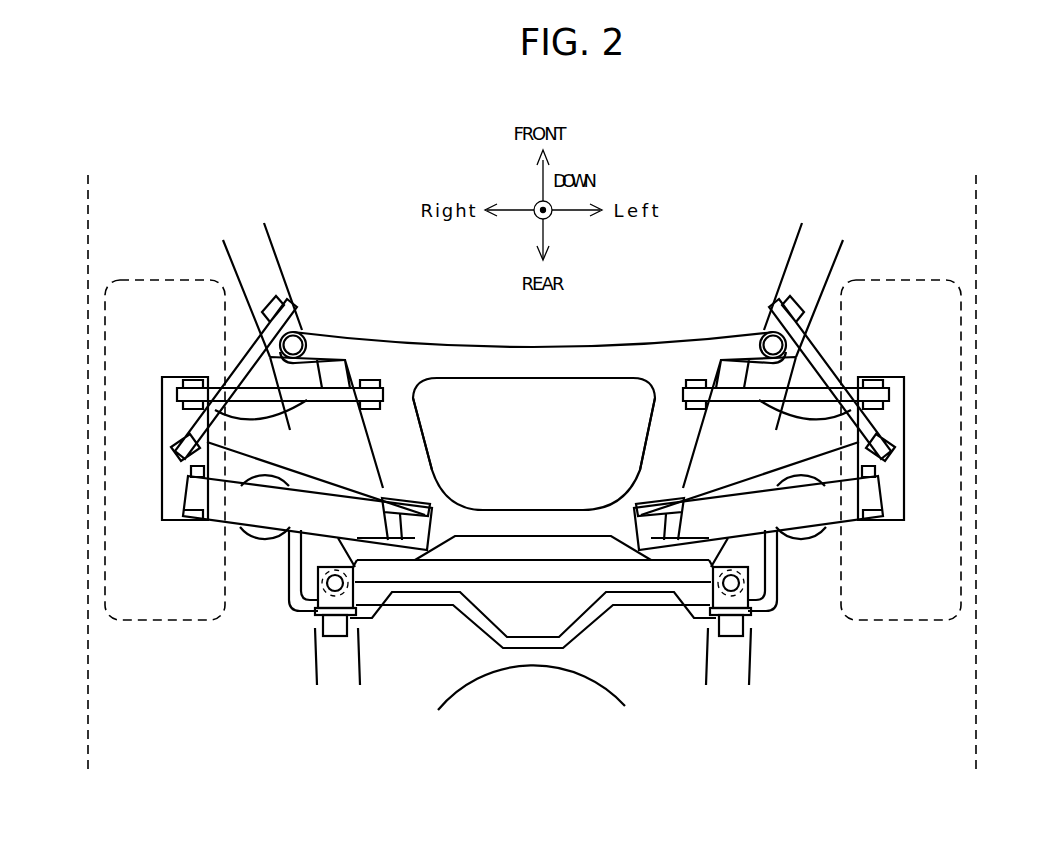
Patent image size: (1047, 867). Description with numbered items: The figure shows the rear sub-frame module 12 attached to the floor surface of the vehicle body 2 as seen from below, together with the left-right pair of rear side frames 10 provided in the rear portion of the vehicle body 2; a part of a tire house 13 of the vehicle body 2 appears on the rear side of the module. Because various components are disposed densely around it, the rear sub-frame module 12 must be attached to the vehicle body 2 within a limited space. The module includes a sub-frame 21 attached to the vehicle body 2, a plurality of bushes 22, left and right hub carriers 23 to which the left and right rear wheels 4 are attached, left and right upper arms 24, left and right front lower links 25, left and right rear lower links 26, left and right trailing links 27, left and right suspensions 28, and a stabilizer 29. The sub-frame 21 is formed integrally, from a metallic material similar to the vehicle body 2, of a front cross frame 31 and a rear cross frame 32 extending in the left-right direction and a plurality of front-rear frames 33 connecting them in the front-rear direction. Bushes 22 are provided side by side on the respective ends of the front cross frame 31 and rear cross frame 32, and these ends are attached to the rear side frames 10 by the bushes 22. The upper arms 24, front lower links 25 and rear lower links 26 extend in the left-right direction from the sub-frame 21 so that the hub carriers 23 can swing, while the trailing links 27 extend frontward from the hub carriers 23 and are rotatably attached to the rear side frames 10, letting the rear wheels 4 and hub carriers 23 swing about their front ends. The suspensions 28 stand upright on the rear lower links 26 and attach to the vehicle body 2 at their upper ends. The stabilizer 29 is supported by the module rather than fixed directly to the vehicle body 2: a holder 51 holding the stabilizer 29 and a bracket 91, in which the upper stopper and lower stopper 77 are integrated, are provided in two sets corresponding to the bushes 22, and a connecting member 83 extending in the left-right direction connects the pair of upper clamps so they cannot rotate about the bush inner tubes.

The vehicle body 2 is at (88, 228).
The rear wheel 4 is at (115, 298).
The rear side frame 10 is at (265, 263).
The rear sub-frame module 12 is at (653, 279).
The tire house 13 is at (477, 682).
The sub-frame 21 is at (402, 365).
The bush 22 is at (293, 343).
The hub carrier 23 is at (167, 422).
The upper arm 24 is at (262, 437).
The front lower link 25 is at (178, 392).
The rear lower link 26 is at (243, 503).
The trailing link 27 is at (245, 360).
The suspension 28 is at (260, 527).
The stabilizer 29 is at (537, 640).
The front cross frame 31 is at (540, 367).
The rear cross frame 32 is at (528, 515).
The front-rear frame 33 is at (412, 445).
The holder 51 is at (335, 636).
The lower stopper 77 is at (347, 590).
The connecting member 83 is at (588, 573).
The bracket 91 is at (352, 617).